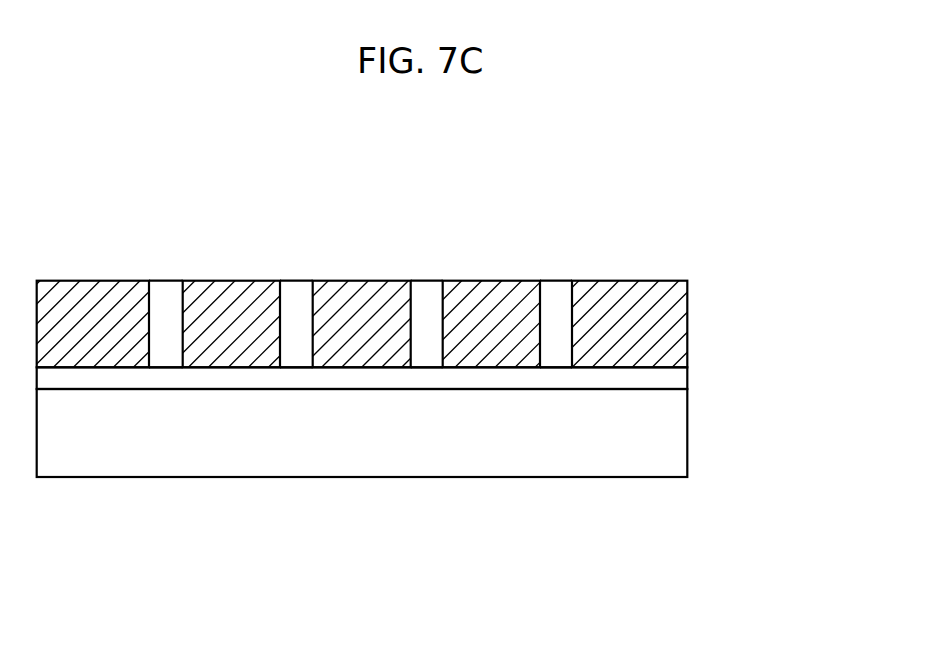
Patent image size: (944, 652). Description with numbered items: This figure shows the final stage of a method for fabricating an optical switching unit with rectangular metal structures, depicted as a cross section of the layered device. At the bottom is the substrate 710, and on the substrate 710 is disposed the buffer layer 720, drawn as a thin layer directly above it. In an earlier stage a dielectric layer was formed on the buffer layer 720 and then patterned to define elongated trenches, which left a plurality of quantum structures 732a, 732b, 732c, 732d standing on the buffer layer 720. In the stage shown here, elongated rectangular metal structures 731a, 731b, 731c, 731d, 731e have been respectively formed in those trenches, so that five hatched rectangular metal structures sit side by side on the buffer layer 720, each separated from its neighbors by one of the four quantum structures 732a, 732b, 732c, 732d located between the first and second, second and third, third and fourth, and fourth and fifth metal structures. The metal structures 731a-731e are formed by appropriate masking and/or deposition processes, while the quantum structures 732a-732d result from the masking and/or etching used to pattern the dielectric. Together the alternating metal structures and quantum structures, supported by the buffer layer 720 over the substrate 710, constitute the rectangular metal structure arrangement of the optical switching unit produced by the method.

The substrate 710 is at (687, 436).
The buffer layer 720 is at (687, 378).
The elongated rectangular metal structure 731a is at (90, 278).
The elongated rectangular metal structure 731b is at (232, 278).
The elongated rectangular metal structure 731c is at (360, 278).
The elongated rectangular metal structure 731d is at (492, 278).
The elongated rectangular metal structure 731e is at (632, 278).
The quantum structure 732a is at (165, 278).
The quantum structure 732b is at (295, 278).
The quantum structure 732c is at (425, 278).
The quantum structure 732d is at (553, 278).